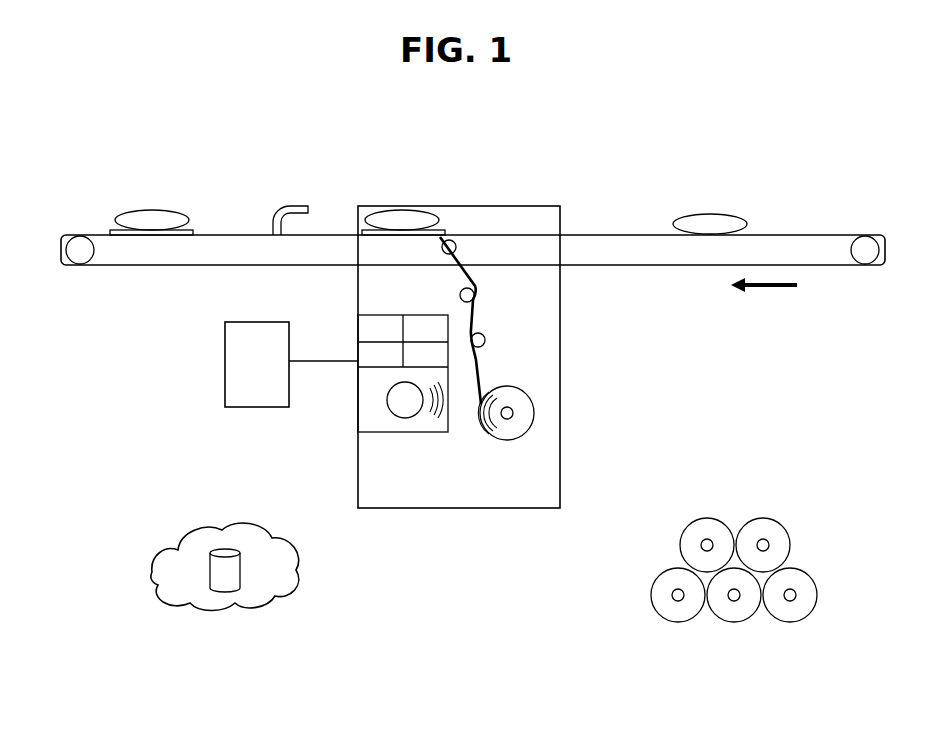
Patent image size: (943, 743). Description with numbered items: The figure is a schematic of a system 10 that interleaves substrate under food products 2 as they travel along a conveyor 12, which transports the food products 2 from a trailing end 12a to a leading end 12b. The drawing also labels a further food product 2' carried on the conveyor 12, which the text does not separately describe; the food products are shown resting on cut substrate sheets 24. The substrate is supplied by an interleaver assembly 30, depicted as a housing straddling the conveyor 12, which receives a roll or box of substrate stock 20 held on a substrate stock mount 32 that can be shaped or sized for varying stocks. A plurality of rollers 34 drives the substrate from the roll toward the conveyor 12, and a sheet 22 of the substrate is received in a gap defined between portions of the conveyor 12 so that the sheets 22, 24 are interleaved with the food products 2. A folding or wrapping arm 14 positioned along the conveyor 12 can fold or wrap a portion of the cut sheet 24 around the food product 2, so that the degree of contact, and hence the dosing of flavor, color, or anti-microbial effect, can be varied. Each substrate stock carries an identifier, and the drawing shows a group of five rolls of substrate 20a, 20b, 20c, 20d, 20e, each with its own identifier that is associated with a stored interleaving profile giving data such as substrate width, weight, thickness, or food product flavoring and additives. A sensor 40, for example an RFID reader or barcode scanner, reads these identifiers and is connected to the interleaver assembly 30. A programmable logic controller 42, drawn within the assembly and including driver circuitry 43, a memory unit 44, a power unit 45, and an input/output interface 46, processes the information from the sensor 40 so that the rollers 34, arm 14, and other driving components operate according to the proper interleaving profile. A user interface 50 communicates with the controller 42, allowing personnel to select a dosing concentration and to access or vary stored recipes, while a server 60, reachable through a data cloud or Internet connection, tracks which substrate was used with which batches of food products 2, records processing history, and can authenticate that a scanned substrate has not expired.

The system 10 is at (565, 178).
The conveyor 12 is at (808, 235).
The trailing end 12a is at (870, 238).
The leading end 12b is at (80, 236).
The food products 2 is at (710, 206).
The object with applied print 2' is at (286, 202).
The substrate sheet 24 is at (194, 232).
The folding or wrapping arm 14 is at (290, 204).
The rollers 34 is at (458, 245).
The interleaver assembly 30 is at (568, 354).
The sheet of the substrate 22 is at (493, 372).
The substrate stock 20 is at (540, 413).
The substrate stock mount 32 is at (507, 419).
The memory unit 44 is at (362, 323).
The driver circuitry 43 is at (368, 355).
The power unit 45 is at (410, 337).
The input/output interface 46 is at (412, 360).
The sensor 40 is at (396, 411).
The programmable logic controller 42 is at (413, 433).
The user interface 50 is at (222, 352).
The server 60 is at (222, 572).
The roll 20a is at (793, 521).
The roll 20b is at (826, 605).
The roll 20c is at (751, 628).
The roll 20d is at (690, 518).
The roll 20e is at (643, 606).